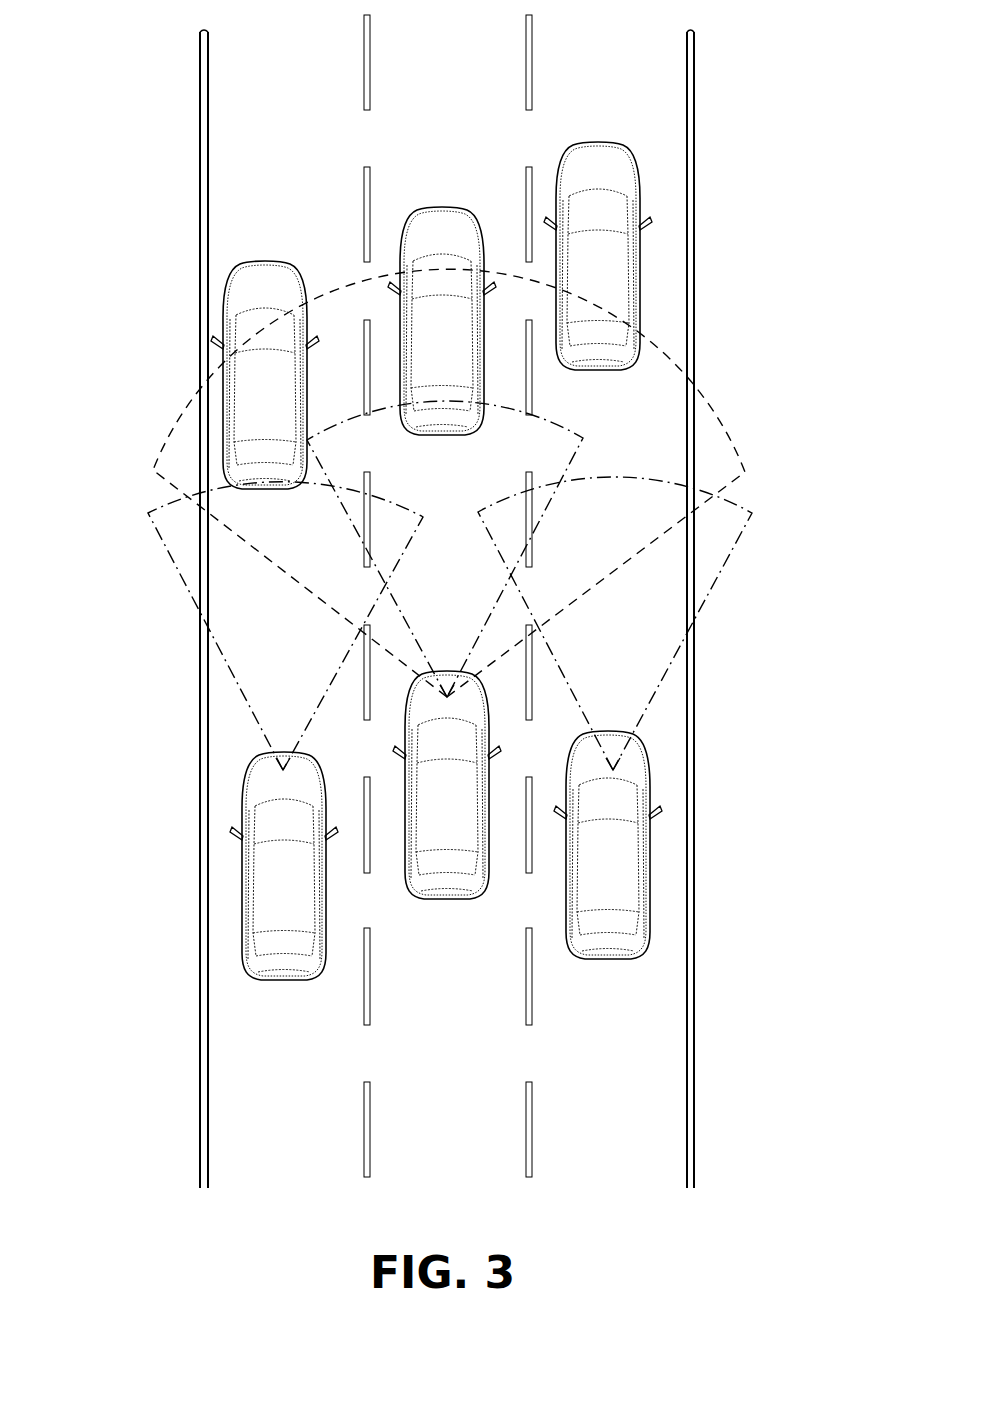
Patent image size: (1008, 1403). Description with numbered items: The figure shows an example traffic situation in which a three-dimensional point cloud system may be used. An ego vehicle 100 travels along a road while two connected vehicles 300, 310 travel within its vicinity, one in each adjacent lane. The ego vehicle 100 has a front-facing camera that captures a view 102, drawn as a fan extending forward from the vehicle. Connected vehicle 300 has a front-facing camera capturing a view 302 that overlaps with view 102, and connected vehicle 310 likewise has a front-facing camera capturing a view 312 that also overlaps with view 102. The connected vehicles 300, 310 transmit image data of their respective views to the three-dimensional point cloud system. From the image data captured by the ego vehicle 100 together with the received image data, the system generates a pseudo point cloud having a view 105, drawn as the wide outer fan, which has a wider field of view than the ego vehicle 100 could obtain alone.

The ego vehicle 100 is at (445, 900).
The view 102 is at (577, 431).
The view 105 is at (510, 355).
The connected vehicle 300 is at (250, 912).
The view 302 is at (241, 693).
The connected vehicle 310 is at (653, 882).
The view 312 is at (716, 595).